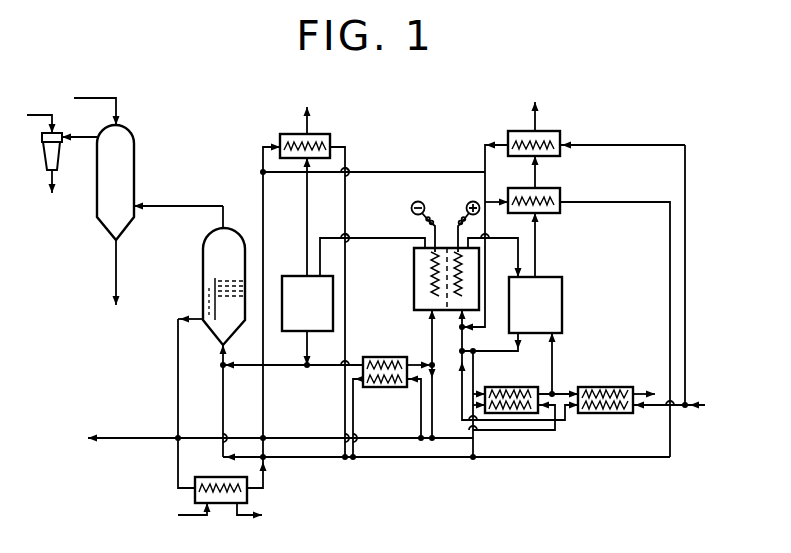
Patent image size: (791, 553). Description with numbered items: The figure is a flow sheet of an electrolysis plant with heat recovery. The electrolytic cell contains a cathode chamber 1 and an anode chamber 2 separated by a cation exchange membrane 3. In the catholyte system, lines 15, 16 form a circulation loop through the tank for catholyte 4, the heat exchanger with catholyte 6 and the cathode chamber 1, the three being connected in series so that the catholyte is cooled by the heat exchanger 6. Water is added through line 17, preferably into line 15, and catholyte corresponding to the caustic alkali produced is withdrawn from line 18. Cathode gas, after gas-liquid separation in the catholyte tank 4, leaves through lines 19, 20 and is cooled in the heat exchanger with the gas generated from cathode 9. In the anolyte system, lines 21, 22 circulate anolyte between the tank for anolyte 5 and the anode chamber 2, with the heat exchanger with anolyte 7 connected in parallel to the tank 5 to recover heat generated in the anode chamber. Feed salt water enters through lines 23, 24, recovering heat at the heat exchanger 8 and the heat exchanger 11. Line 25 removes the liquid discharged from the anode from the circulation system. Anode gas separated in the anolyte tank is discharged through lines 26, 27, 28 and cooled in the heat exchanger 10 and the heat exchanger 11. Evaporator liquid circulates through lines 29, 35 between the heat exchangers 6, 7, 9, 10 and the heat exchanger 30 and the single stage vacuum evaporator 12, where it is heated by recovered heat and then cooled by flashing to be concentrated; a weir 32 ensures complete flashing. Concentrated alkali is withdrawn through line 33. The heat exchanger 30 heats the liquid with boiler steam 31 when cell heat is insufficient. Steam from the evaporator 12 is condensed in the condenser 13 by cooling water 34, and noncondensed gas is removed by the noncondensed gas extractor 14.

The cathode chamber of electrolytic cell 1 is at (446, 256).
The anode chamber of electrolytic cell 2 is at (467, 249).
The cation exchange membrane 3 is at (447, 300).
The tank for catholyte 4 is at (307, 322).
The tank for anolyte 5 is at (535, 305).
The heat exchanger with catholyte 6 is at (382, 387).
The heat exchanger with anolyte 7 is at (522, 387).
The heat exchanger between the liquid discharged from anolyte and saltous water supp 8 is at (595, 387).
The heat exchanger with the gas generated from cathode 9 is at (323, 134).
The heat exchanger with the gas generated from anode 10 is at (560, 212).
The heat exchanger between the gas generated from anode and the saltous water suppli 11 is at (558, 131).
The single stage vacuum evaporator 12 is at (189, 346).
The condenser 13 is at (115, 215).
The noncondensed gas extractor 14 is at (58, 153).
The line 15 is at (323, 368).
The line 16 is at (385, 238).
The line 17 is at (436, 375).
The line 18 is at (282, 368).
The line 19 is at (305, 207).
The line 20 is at (307, 109).
The line 21 is at (484, 358).
The line 22 is at (492, 240).
The line 23 is at (654, 406).
The line 24 is at (685, 305).
The line 25 is at (649, 384).
The line 26 is at (538, 250).
The line 27 is at (538, 172).
The line 28 is at (535, 105).
The line 29 is at (228, 434).
The heat exchanger 30 is at (220, 477).
The boiler steam 31 is at (178, 515).
The weir 32 is at (226, 299).
The line 33 is at (265, 439).
The cooling water 34 is at (97, 99).
The line 35 is at (310, 458).